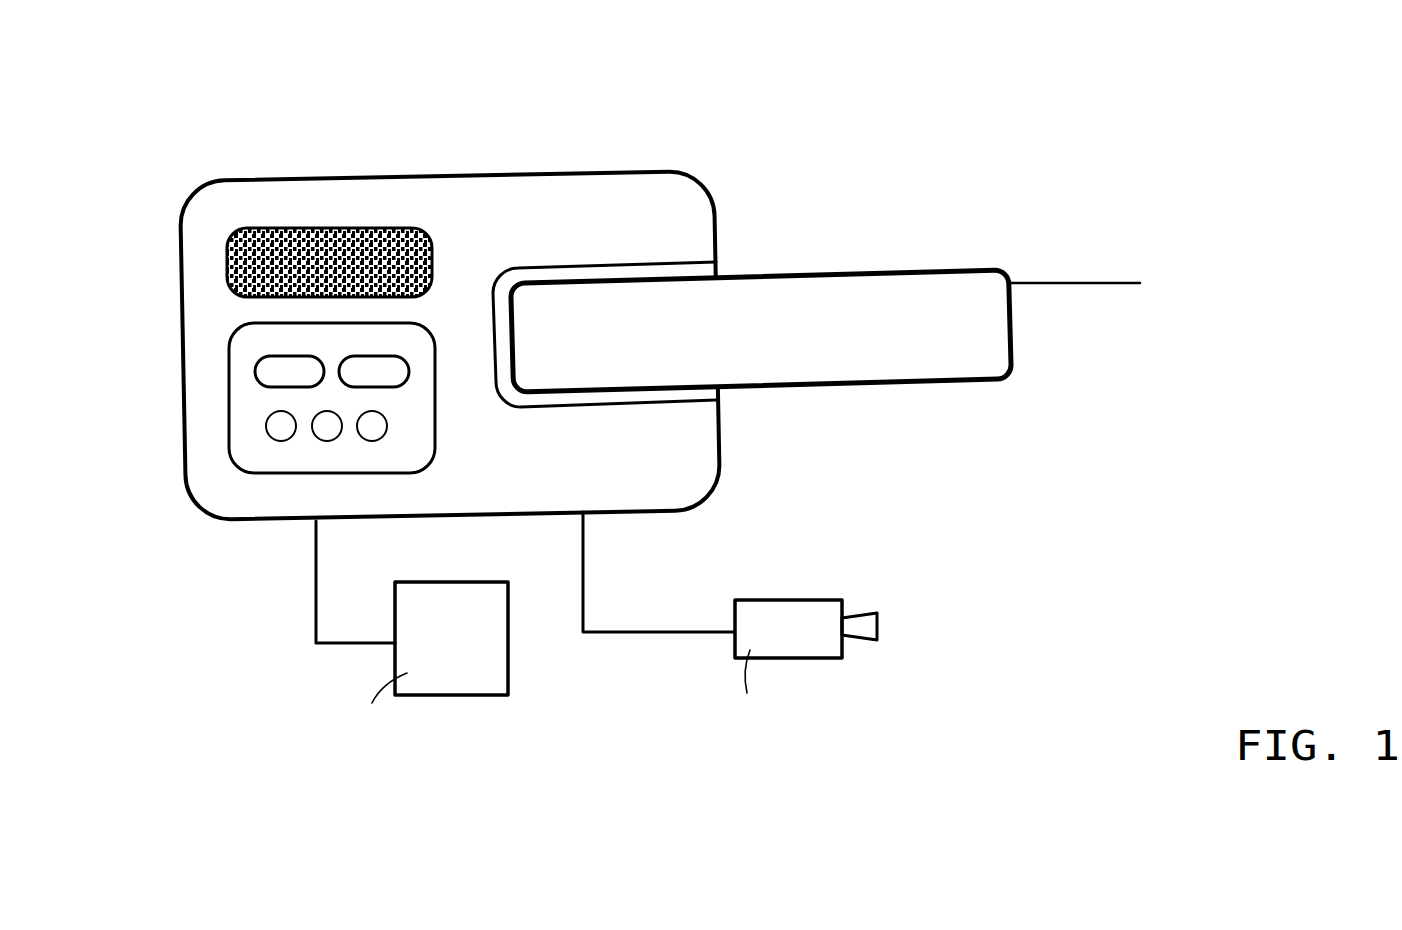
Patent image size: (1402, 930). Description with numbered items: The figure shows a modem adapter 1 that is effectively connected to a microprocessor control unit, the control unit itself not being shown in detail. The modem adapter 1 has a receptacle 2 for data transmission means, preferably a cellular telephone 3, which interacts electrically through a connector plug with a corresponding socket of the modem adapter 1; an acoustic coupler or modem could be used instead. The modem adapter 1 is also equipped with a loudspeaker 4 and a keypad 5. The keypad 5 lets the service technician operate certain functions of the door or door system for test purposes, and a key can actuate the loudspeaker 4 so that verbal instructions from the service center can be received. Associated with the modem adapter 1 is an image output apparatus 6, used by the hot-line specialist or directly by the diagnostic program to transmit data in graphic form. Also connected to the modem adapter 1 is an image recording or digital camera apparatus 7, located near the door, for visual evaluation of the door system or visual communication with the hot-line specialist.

The modem adapter 1 is at (560, 193).
The receptacle 2 is at (672, 404).
The cellular telephone 3 is at (830, 272).
The loudspeaker 4 is at (287, 257).
The keypad 5 is at (305, 452).
The image output apparatus 6 is at (442, 666).
The image recording or digital camera apparatus 7 is at (790, 630).